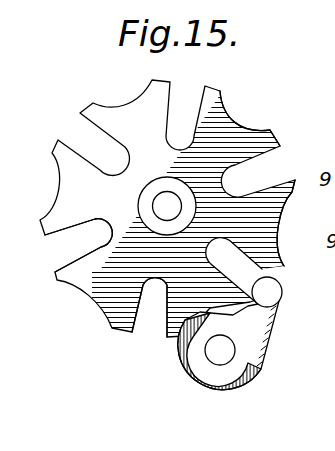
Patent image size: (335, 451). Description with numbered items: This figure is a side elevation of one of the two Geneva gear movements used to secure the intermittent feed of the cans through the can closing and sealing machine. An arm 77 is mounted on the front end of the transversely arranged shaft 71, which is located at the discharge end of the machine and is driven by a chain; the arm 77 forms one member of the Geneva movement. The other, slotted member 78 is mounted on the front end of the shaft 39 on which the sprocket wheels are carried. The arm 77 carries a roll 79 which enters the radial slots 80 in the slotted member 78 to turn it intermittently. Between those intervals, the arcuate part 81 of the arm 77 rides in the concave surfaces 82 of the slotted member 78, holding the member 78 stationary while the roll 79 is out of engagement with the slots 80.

The shaft 39 is at (163, 205).
The shaft 71 is at (216, 356).
The arm 77 is at (255, 342).
The slotted member 78 is at (116, 283).
The roll 79 is at (270, 292).
The radial slots 80 is at (73, 250).
The arcuate part 81 is at (243, 378).
The concave surfaces 82 is at (233, 133).